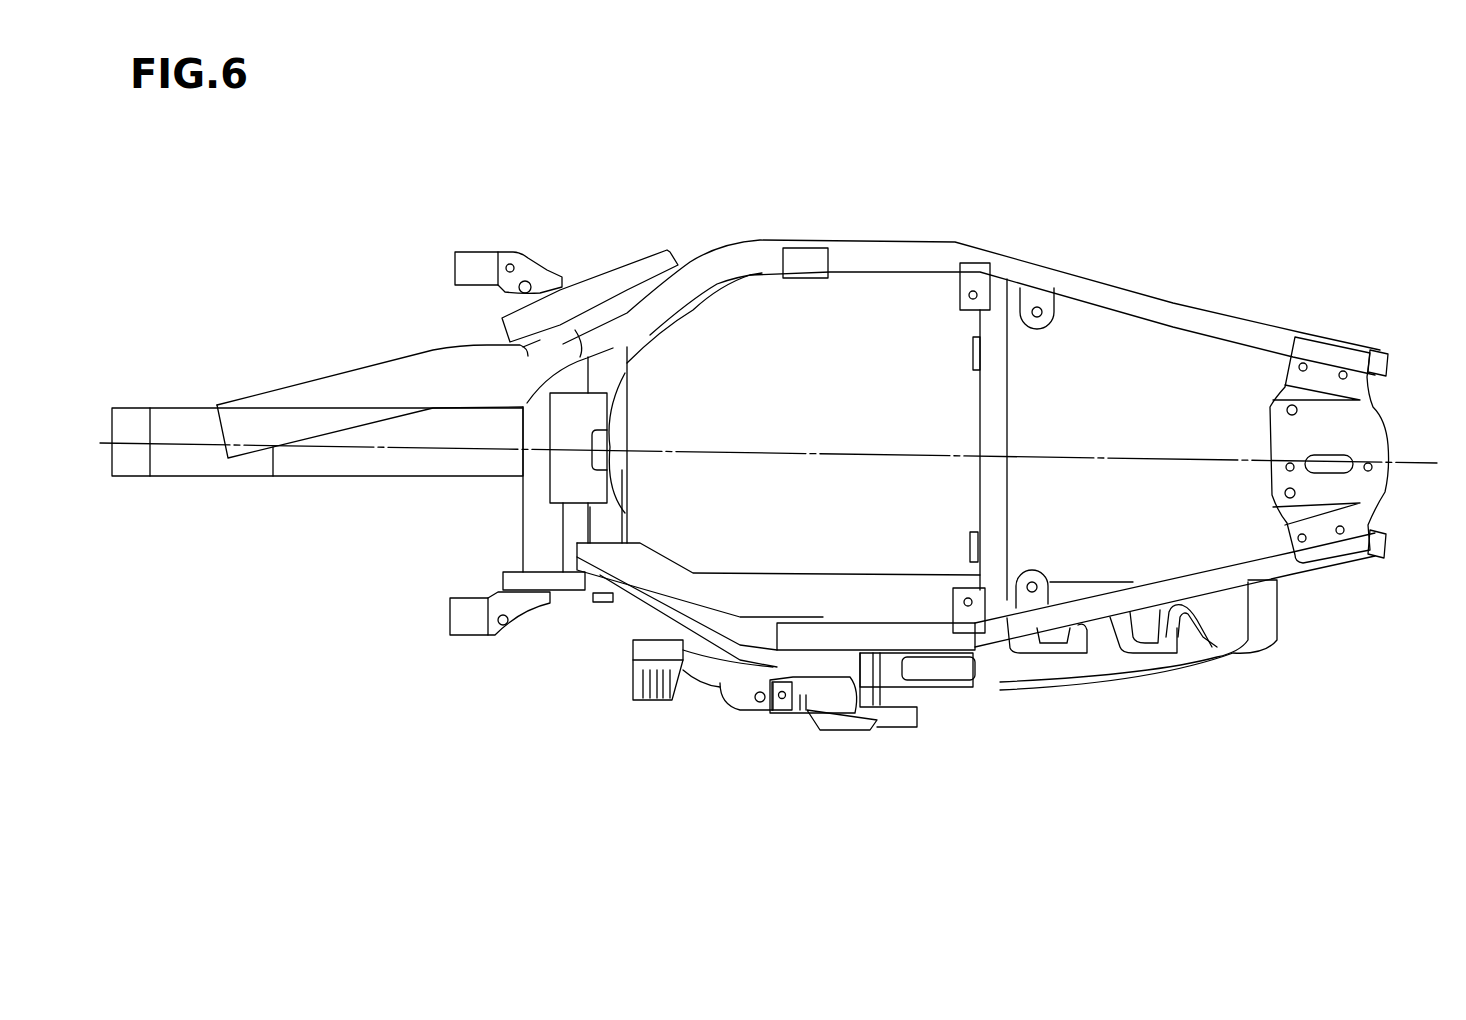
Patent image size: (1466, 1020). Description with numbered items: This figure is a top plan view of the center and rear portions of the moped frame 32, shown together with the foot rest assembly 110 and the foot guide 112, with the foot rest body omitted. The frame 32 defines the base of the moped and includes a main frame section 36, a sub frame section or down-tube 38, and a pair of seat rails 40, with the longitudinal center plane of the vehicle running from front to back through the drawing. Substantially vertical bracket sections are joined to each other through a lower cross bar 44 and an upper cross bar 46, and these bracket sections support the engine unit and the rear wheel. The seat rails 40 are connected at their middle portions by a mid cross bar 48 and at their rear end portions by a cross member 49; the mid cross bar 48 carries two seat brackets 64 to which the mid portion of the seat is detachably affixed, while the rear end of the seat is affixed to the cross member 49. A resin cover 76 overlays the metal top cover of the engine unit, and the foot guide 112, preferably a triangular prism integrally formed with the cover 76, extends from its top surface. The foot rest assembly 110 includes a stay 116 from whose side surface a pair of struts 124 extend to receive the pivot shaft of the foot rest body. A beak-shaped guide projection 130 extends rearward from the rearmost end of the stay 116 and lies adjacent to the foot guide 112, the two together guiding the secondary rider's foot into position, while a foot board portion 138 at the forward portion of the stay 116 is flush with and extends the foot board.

The frame 32 is at (1240, 296).
The main frame section 36 is at (363, 363).
The sub frame section or down-tube 38 is at (188, 478).
The seat rails 40 is at (1140, 286).
The lower cross bar 44 is at (515, 510).
The upper cross bar 46 is at (632, 368).
The mid cross bar 48 is at (1010, 433).
The cross member 49 is at (1373, 437).
The seat brackets 64 is at (977, 270).
The cover 76 is at (1205, 658).
The foot rest assembly 110 is at (704, 706).
The foot guide 112 is at (940, 668).
The stay 116 is at (827, 722).
The struts 124 is at (753, 704).
The guide projection 130 is at (893, 728).
The foot board portion 138 is at (650, 701).